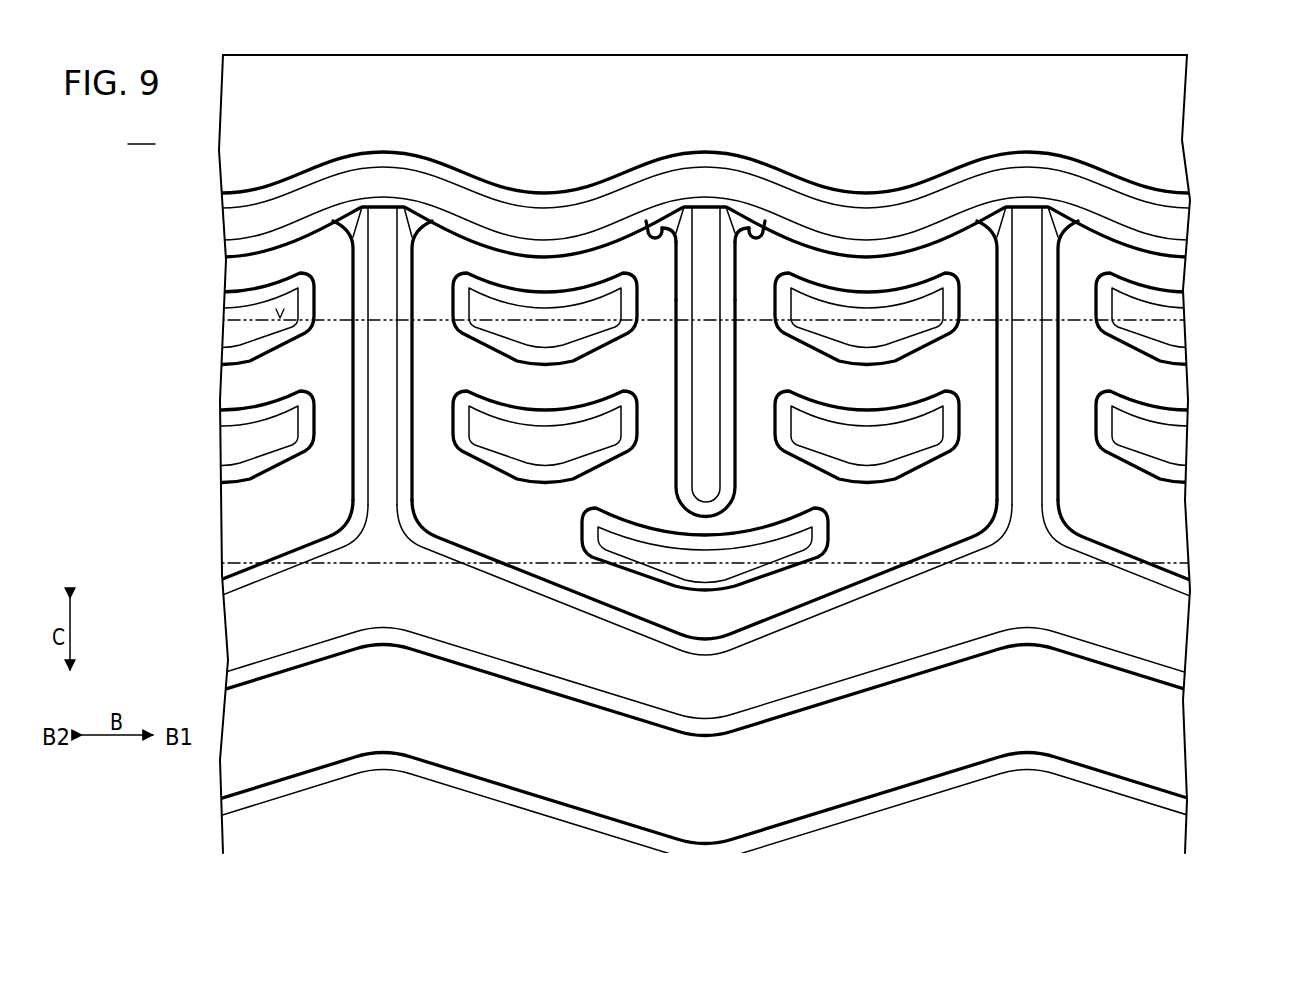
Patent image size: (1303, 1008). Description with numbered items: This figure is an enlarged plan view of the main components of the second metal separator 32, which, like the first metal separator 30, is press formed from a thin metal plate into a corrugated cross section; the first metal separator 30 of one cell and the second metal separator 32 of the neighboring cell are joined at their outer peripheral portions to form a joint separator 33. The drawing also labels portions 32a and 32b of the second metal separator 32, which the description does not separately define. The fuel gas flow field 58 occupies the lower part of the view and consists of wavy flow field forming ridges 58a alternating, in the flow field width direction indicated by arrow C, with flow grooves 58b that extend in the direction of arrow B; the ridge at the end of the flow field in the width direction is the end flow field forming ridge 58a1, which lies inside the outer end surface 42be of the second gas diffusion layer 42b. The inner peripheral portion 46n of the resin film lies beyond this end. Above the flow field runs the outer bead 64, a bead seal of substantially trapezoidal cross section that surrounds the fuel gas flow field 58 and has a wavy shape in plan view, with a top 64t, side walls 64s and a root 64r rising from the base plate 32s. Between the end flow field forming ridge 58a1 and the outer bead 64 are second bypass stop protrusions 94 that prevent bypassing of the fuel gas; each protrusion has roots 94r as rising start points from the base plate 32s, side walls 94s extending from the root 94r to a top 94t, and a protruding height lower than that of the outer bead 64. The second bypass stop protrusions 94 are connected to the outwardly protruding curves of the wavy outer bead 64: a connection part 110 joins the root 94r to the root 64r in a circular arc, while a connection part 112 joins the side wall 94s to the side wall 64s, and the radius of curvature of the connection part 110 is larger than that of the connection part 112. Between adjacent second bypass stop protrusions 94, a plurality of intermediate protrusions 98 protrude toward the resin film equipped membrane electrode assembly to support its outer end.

The first metal separator 30 is at (1192, 95).
The second metal separator 32 is at (1190, 70).
The upper flat portion of panel 32a is at (1105, 109).
The bent portion of panel 32b is at (1167, 147).
The base plate 32s is at (975, 463).
The joint separator 33 is at (141, 132).
The second gas diffusion layer 42b is at (280, 312).
The outer end surface 42be is at (257, 315).
The inner peripheral portion 46n is at (415, 566).
The fuel gas flow field 58 is at (1006, 800).
The flow field forming ridges 58a is at (705, 695).
The end flow field forming ridges 58a1 is at (803, 672).
The flow grooves 58b is at (955, 738).
The outer bead 64 is at (925, 170).
The top 64t is at (505, 215).
The side walls 64s is at (868, 202).
The root 64r is at (607, 246).
The second bypass stop protrusions 94 is at (360, 435).
The root 94r is at (737, 261).
The side walls 94s is at (722, 435).
The top 94t is at (712, 356).
The intermediate protrusions 98 is at (279, 342).
The connection part 110 is at (643, 237).
The connection part 112 is at (730, 212).